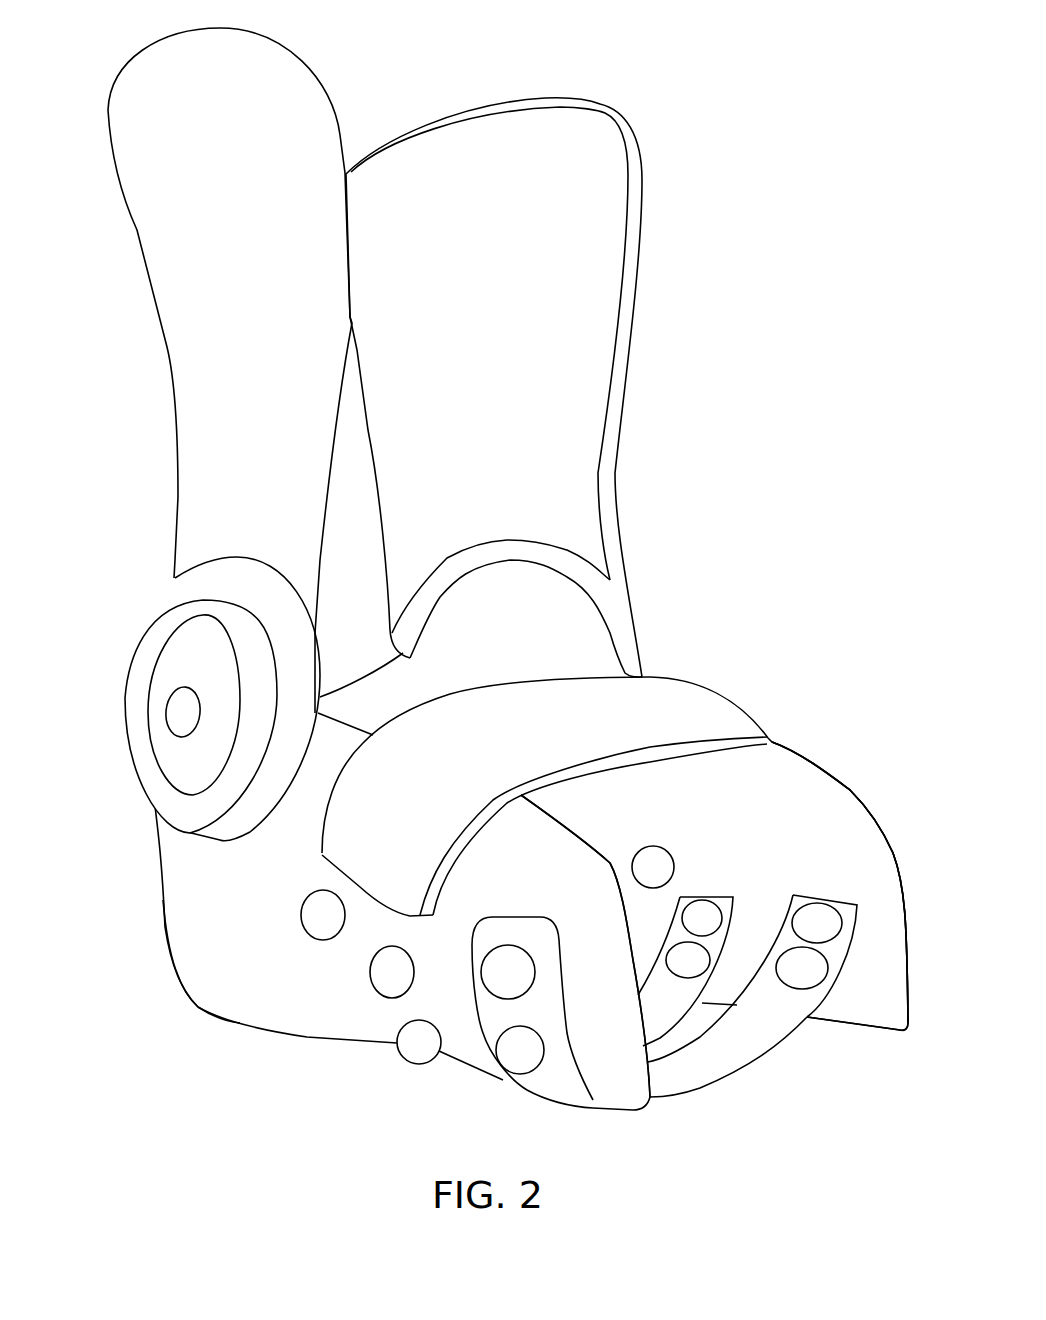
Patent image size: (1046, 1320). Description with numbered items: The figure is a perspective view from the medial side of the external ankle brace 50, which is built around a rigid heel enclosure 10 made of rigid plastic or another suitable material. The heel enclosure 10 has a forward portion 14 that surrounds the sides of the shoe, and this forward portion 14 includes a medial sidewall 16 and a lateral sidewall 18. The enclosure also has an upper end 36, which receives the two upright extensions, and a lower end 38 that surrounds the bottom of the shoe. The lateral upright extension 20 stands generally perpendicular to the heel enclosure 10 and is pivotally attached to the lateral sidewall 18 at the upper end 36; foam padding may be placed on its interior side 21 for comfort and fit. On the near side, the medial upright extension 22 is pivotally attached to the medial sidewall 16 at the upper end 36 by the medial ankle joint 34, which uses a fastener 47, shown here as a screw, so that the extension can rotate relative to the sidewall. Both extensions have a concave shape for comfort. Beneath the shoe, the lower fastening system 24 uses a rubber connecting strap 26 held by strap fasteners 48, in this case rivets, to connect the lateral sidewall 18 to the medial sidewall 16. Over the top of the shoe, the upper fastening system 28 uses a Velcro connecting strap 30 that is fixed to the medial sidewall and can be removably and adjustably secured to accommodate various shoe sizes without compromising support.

The rigid heel enclosure 10 is at (157, 918).
The forward portion 14 is at (887, 823).
The medial sidewall 16 is at (212, 977).
The lateral sidewall 18 is at (793, 793).
The lateral upright extension 20 is at (628, 368).
The interior side 21 is at (540, 308).
The medial upright extension 22 is at (222, 393).
The lower fastening system 24 is at (670, 1037).
The connecting strap 26 is at (767, 1003).
The upper fastening system 28 is at (740, 698).
The connecting strap 30 is at (687, 715).
The medial ankle joint 34 is at (120, 760).
The upper end 36 is at (513, 563).
The lower end 38 is at (300, 1040).
The fastener 47 is at (182, 712).
The strap fastener 48 is at (508, 980).
The external ankle brace 50 is at (133, 227).